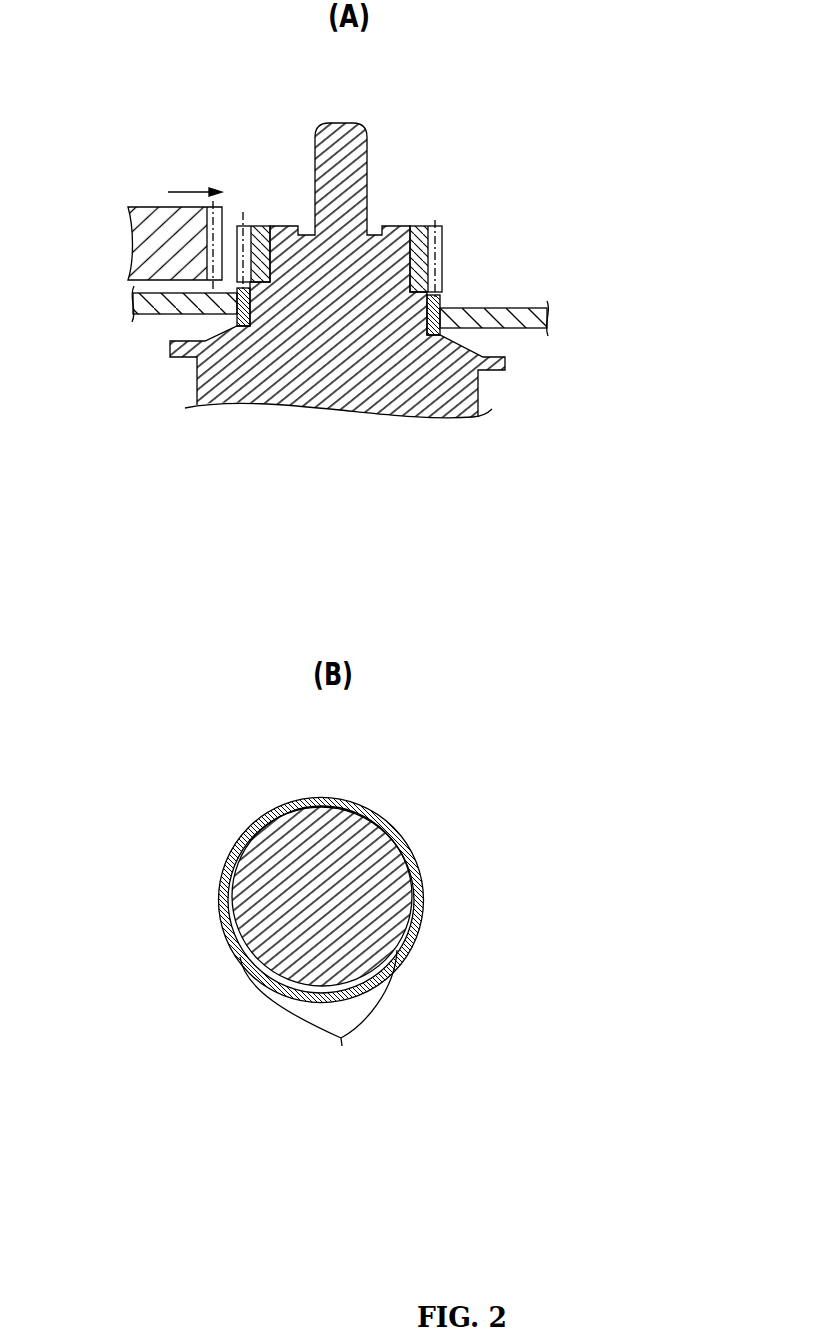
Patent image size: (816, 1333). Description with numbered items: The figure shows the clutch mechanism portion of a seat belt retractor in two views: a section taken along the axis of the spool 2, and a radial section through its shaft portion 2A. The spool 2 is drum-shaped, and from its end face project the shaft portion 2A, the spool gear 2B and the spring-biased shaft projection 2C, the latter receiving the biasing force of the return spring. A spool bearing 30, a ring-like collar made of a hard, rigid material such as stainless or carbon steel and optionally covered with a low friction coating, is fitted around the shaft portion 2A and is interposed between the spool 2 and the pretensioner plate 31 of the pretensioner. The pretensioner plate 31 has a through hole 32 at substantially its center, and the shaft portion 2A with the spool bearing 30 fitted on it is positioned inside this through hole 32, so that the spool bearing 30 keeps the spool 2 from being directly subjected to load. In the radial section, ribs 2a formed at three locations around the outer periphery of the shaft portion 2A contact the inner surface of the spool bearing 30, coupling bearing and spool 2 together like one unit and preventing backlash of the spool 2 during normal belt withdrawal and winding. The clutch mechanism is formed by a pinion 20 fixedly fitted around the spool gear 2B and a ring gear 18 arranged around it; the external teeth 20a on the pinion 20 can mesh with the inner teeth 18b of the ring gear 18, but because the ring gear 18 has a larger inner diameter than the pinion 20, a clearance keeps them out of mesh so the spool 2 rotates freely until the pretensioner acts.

The spool 2 is at (467, 388).
The shaft portion 2A is at (440, 330).
The spool gear 2B is at (395, 237).
The spring-biased shaft projection 2C is at (357, 150).
The ribs 2a is at (318, 1011).
The ring gear 18 is at (152, 224).
The inner teeth 18b is at (220, 227).
The pinion 20 is at (442, 232).
The external teeth 20a is at (442, 258).
The spool bearing 30 is at (443, 300).
The pretensioner plate 31 is at (157, 308).
The through hole 32 is at (250, 311).